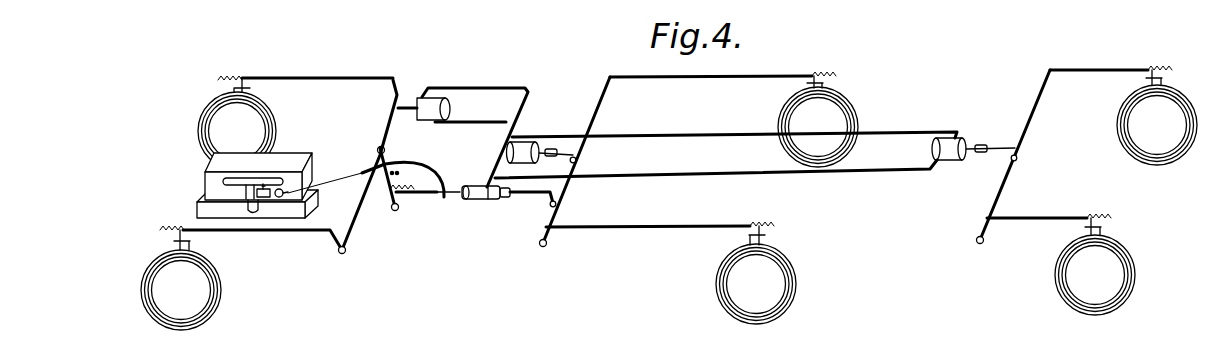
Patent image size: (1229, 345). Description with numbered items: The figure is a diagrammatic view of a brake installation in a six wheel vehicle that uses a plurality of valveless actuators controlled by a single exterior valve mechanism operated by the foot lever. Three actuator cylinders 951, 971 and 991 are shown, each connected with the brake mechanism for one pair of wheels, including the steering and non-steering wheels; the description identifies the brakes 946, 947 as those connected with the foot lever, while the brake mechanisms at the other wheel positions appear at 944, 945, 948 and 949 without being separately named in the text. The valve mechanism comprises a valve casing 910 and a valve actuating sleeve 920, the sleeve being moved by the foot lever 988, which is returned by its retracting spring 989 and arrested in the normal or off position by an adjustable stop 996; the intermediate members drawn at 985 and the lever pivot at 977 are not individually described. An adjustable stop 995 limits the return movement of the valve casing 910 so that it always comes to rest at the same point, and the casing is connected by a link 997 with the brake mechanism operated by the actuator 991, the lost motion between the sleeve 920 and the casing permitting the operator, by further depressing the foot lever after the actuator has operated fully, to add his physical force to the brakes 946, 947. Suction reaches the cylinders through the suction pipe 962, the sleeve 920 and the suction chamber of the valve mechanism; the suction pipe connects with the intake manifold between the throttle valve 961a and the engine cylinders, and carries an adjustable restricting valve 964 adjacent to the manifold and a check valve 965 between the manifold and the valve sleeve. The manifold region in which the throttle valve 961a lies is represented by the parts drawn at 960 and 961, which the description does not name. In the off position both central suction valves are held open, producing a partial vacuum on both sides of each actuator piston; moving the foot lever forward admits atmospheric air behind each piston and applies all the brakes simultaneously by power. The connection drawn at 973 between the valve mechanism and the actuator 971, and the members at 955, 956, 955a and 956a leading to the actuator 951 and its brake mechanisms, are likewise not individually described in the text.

The solenoid coil 945 is at (226, 112).
The valve casing lid 960 is at (224, 165).
The valve casing base 961 is at (222, 192).
The throttle valve 961a is at (243, 206).
The adjustable restricting valve 964 is at (265, 200).
The check valve 965 is at (285, 200).
The solenoid coil 944 is at (241, 278).
The lever pivot 977 is at (347, 253).
The foot lever 988 is at (380, 147).
The retracting spring 989 is at (391, 200).
The adjustable stop 996 is at (395, 171).
The bar 985 is at (425, 195).
The link 973 is at (406, 105).
The actuator cylinder 971 is at (451, 108).
The suction pipe 962 is at (432, 171).
The shaft 956 is at (490, 163).
The connector 955 is at (492, 184).
The valve actuating sleeve 920 is at (448, 197).
The valve casing 910 is at (483, 200).
The adjustable stop 995 is at (505, 199).
The link 997 is at (536, 194).
The valveless actuator 991 is at (523, 146).
The brake mechanism 947 is at (856, 92).
The bar 956a is at (897, 133).
The actuator cylinder 951 is at (968, 131).
The bar 955a is at (912, 172).
The solenoid coil 949 is at (1184, 100).
The brake mechanism 946 is at (796, 262).
The solenoid coil 948 is at (1139, 262).